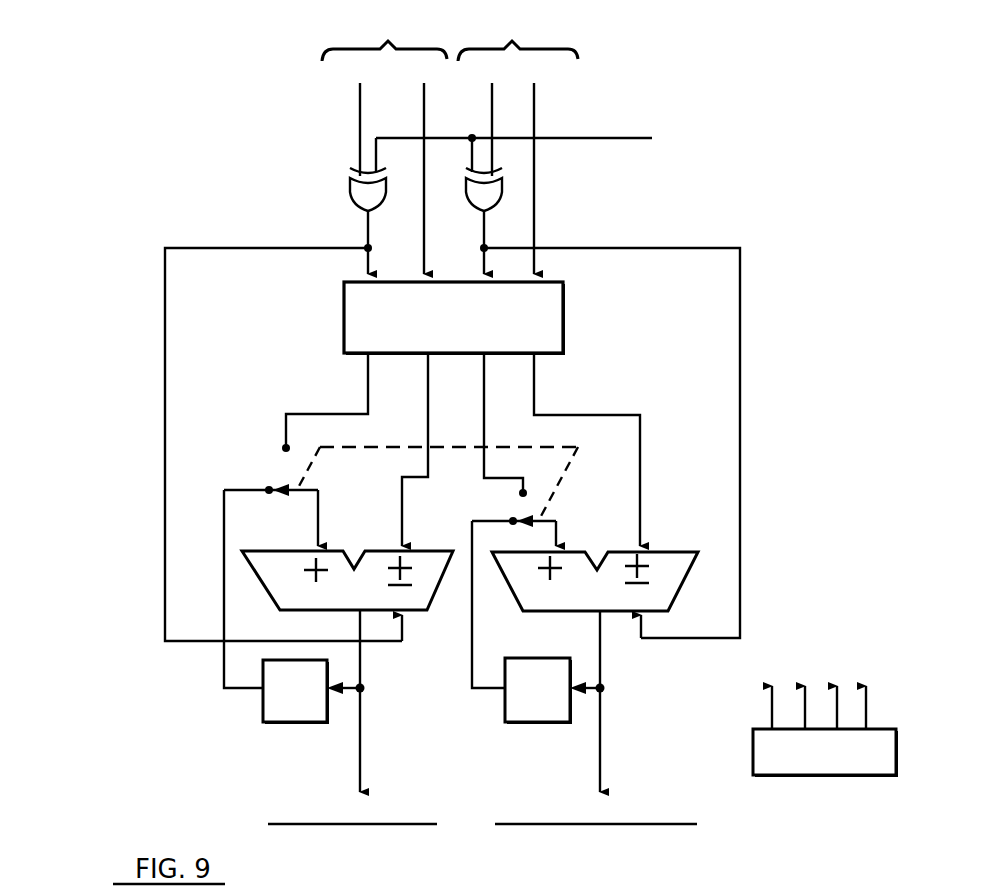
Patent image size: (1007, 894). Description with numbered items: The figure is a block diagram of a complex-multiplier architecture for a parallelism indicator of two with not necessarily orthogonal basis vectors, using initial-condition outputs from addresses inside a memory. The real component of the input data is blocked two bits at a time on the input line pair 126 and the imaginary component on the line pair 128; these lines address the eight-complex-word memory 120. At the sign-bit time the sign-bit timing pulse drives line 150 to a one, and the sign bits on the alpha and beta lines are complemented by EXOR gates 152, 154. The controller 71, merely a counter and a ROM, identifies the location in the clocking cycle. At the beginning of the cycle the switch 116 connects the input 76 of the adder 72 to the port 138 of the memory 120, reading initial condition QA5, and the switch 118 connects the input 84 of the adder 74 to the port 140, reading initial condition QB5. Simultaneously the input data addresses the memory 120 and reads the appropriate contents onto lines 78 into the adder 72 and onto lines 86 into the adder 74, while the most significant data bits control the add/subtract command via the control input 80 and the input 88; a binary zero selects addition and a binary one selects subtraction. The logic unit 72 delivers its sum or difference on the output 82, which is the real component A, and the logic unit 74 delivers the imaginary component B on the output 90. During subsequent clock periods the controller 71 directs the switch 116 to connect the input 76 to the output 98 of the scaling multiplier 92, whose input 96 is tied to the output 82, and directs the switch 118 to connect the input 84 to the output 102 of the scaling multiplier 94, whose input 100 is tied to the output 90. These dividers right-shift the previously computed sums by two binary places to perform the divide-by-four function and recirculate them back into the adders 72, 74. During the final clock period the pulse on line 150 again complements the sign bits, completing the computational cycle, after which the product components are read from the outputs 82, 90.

The input line pair 126 is at (388, 41).
The line pair 128 is at (512, 41).
The sign-bit timing line 150 is at (552, 138).
The EXOR gate 152 is at (368, 200).
The EXOR gate 154 is at (484, 200).
The memory 120 is at (552, 314).
The port 138 is at (283, 435).
The port 140 is at (486, 410).
The switch 116 is at (307, 488).
The switch 118 is at (543, 520).
The data input 76 is at (318, 510).
The data input 78 is at (404, 497).
The input 84 is at (558, 527).
The input 86 is at (640, 490).
The input 88 is at (740, 548).
The control input 80 is at (404, 634).
The logic unit 72 is at (282, 593).
The logic unit 74 is at (668, 600).
The output 82 is at (362, 672).
The output 90 is at (600, 650).
The scaling multiplier 92 is at (263, 700).
The scaling multiplier 94 is at (535, 668).
The input 96 is at (353, 694).
The input 100 is at (592, 694).
The output 98 is at (222, 665).
The output 102 is at (472, 650).
The controller 71 is at (817, 766).